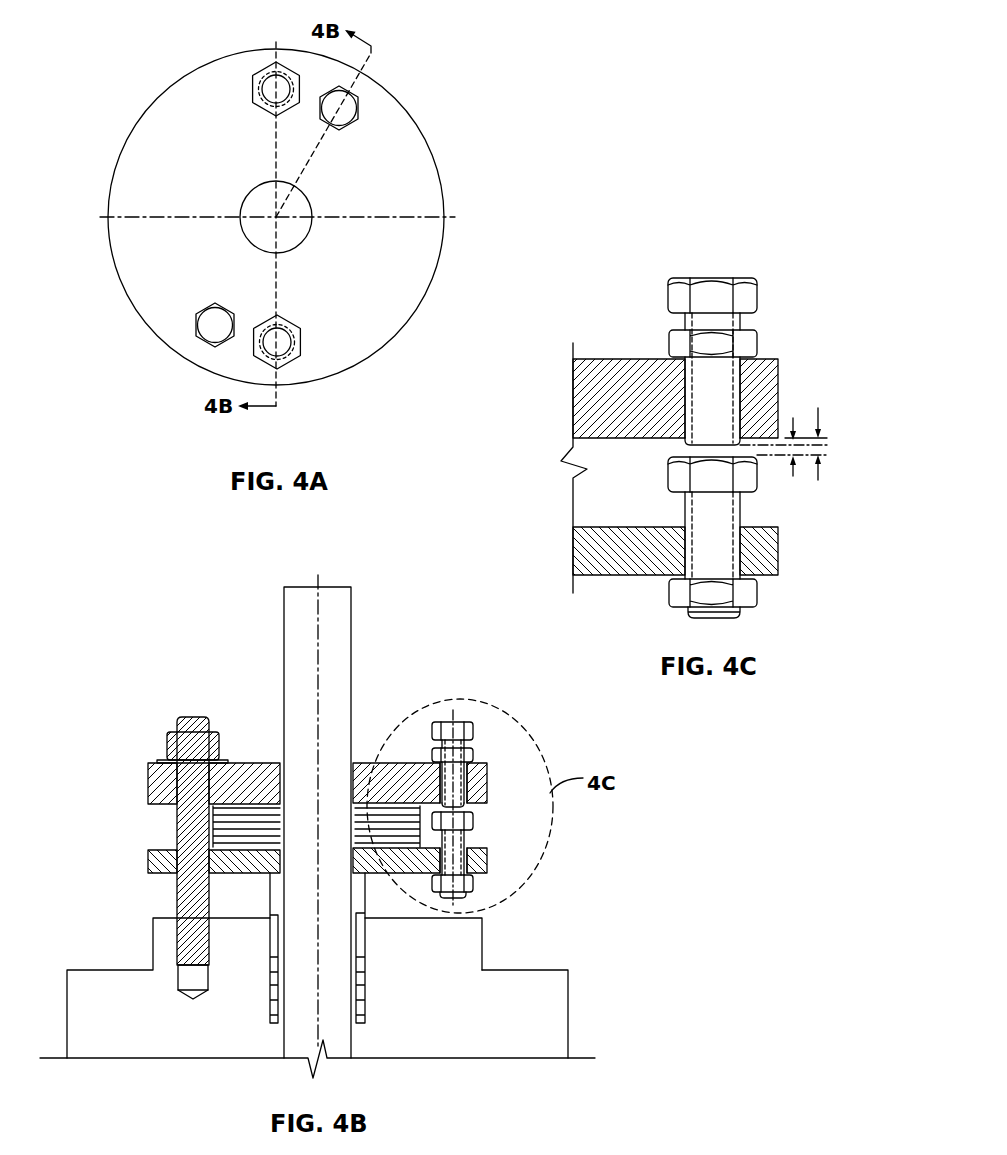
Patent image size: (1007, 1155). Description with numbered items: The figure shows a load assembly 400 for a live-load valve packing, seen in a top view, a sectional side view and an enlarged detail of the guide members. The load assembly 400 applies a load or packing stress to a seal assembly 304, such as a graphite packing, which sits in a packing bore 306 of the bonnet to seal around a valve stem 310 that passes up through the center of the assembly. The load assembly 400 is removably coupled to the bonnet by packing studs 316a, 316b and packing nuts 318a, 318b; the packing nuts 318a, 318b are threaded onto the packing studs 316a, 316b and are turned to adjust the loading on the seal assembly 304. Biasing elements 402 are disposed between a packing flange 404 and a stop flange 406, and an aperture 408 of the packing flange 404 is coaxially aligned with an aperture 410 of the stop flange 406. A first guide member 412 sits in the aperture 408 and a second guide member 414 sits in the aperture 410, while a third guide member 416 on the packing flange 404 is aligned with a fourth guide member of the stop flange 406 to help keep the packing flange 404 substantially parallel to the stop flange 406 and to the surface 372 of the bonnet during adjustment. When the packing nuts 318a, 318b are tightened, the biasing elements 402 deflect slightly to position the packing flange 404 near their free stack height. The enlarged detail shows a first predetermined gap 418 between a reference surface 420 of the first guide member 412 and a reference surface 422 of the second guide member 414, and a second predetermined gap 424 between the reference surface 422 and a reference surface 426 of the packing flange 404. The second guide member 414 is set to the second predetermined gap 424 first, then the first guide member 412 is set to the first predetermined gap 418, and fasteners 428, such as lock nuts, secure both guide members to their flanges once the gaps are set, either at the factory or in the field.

In FIG. 4B, the seal assembly 304 is at (372, 1002).
In FIG. 4B, the packing bore 306 is at (568, 1003).
In FIG. 4A, the valve stem 310 is at (240, 232).
In FIG. 4B, the valve stem 310 is at (283, 608).
In FIG. 4A, the packing stud 316a is at (285, 350).
In FIG. 4A, the packing stud 316b is at (258, 93).
In FIG. 4A, the packing nut 318a is at (300, 340).
In FIG. 4A, the packing nut 318b is at (263, 72).
In FIG. 4B, the surface of the bonnet 372 is at (428, 918).
In FIG. 4B, the load assembly 400 is at (116, 815).
In FIG. 4C, the load assembly 400 is at (790, 242).
In FIG. 4B, the biasing elements 402 is at (222, 808).
In FIG. 4A, the packing flange 404 is at (444, 183).
In FIG. 4B, the packing flange 404 is at (487, 775).
In FIG. 4B, the stop flange 406 is at (485, 860).
In FIG. 4B, the aperture of the packing flange 408 is at (422, 772).
In FIG. 4B, the aperture of the stop flange 410 is at (468, 872).
In FIG. 4A, the first guide member 412 is at (358, 108).
In FIG. 4B, the first guide member 412 is at (448, 722).
In FIG. 4C, the first guide member 412 is at (667, 297).
In FIG. 4B, the second guide member 414 is at (422, 828).
In FIG. 4C, the second guide member 414 is at (684, 517).
In FIG. 4A, the third guide member 416 is at (202, 323).
In FIG. 4C, the first predetermined gap 418 is at (794, 476).
In FIG. 4B, the reference surface of the first guide member 420 is at (440, 808).
In FIG. 4C, the reference surface of the first guide member 420 is at (690, 447).
In FIG. 4B, the reference surface of the second guide member 422 is at (450, 808).
In FIG. 4C, the reference surface of the second guide member 422 is at (683, 452).
In FIG. 4C, the second predetermined gap 424 is at (820, 418).
In FIG. 4B, the reference surface of the packing flange 426 is at (158, 806).
In FIG. 4C, the reference surface of the packing flange 426 is at (575, 443).
In FIG. 4B, the fasteners 428 is at (477, 757).
In FIG. 4C, the fasteners 428 is at (757, 345).